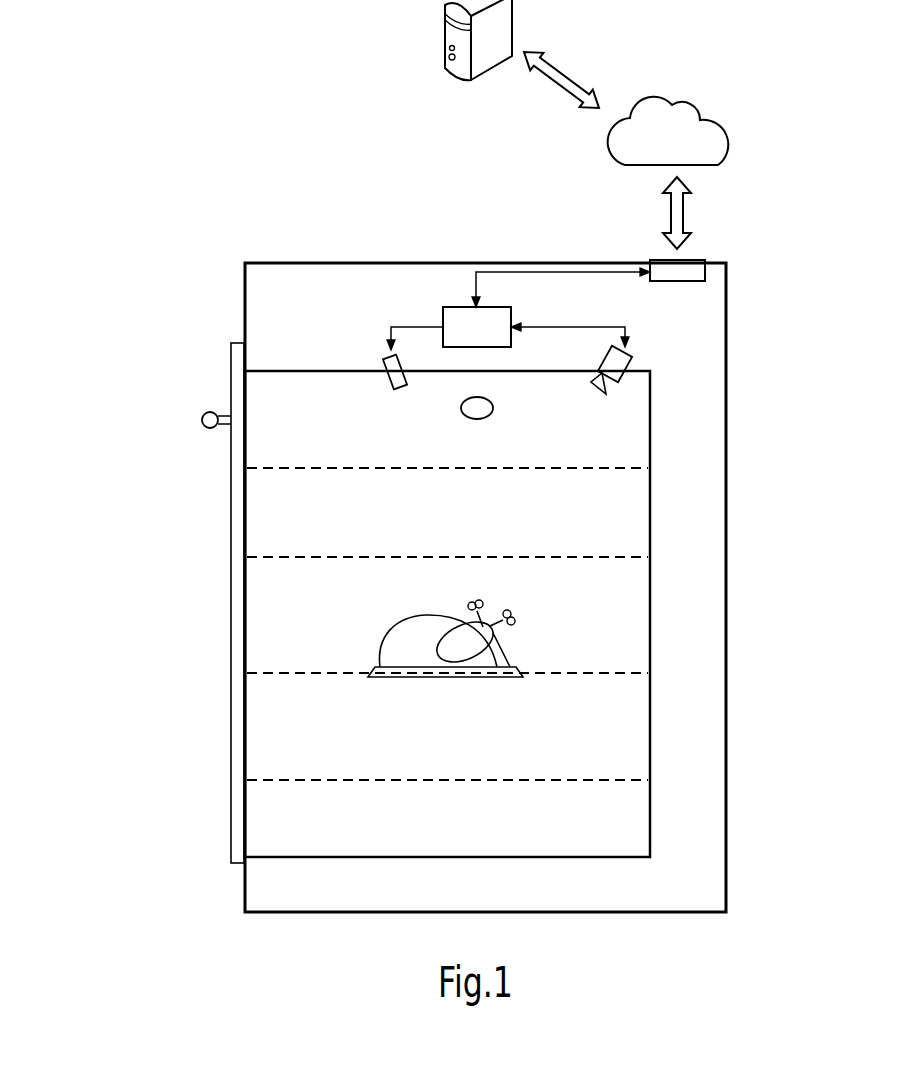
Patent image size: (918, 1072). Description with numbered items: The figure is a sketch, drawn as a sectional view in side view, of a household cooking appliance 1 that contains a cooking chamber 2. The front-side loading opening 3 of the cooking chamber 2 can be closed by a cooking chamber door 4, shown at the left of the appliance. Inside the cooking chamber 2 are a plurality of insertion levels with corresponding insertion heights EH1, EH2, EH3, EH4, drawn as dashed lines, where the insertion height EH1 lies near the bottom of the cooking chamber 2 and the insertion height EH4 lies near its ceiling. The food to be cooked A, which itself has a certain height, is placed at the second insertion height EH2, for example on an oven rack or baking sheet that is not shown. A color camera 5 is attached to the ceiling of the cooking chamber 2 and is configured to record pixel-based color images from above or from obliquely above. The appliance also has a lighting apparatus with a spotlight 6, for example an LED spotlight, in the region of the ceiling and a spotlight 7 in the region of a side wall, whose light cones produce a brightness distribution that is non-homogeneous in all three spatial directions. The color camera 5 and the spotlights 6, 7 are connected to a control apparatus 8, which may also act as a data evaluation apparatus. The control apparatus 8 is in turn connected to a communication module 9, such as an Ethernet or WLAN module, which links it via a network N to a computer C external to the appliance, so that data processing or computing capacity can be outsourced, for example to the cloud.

The household cooking appliance 1 is at (162, 173).
The cooking chamber 2 is at (268, 510).
The front-side loading opening 3 is at (303, 536).
The cooking chamber door 4 is at (230, 613).
The color camera 5 is at (635, 360).
The spotlight 6 is at (383, 365).
The spotlight 7 is at (493, 410).
The control apparatus 8 is at (443, 312).
The communication module 9 is at (705, 272).
The food to be cooked A is at (385, 630).
The computer C is at (445, 30).
The network N is at (737, 143).
The insertion height EH1 is at (668, 780).
The insertion height EH2 is at (668, 673).
The insertion height EH3 is at (668, 557).
The insertion height EH4 is at (668, 468).